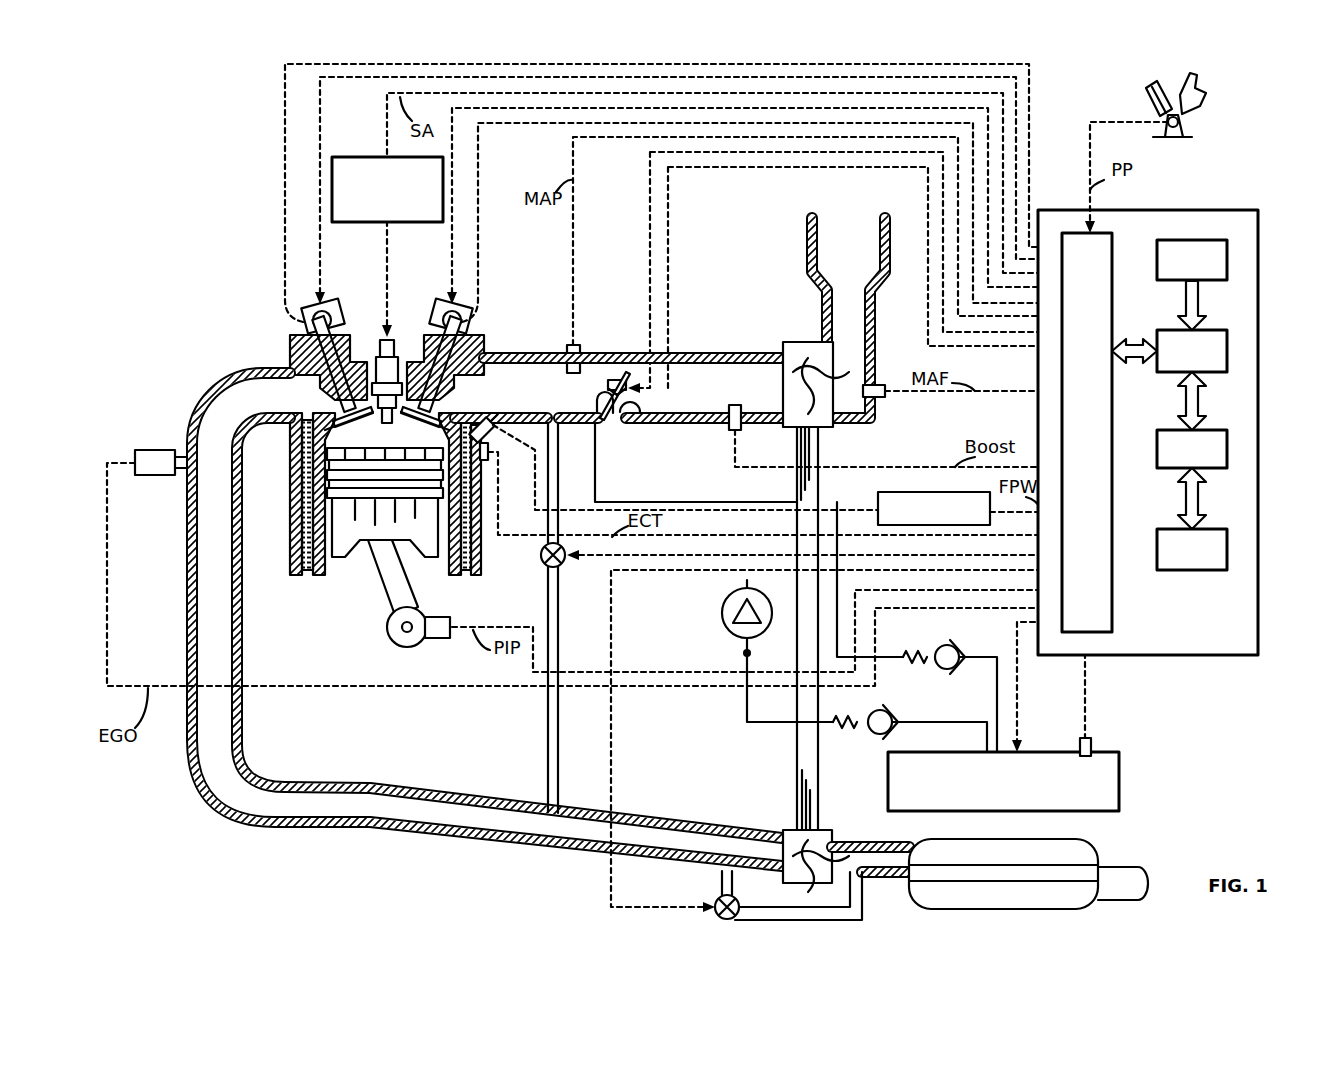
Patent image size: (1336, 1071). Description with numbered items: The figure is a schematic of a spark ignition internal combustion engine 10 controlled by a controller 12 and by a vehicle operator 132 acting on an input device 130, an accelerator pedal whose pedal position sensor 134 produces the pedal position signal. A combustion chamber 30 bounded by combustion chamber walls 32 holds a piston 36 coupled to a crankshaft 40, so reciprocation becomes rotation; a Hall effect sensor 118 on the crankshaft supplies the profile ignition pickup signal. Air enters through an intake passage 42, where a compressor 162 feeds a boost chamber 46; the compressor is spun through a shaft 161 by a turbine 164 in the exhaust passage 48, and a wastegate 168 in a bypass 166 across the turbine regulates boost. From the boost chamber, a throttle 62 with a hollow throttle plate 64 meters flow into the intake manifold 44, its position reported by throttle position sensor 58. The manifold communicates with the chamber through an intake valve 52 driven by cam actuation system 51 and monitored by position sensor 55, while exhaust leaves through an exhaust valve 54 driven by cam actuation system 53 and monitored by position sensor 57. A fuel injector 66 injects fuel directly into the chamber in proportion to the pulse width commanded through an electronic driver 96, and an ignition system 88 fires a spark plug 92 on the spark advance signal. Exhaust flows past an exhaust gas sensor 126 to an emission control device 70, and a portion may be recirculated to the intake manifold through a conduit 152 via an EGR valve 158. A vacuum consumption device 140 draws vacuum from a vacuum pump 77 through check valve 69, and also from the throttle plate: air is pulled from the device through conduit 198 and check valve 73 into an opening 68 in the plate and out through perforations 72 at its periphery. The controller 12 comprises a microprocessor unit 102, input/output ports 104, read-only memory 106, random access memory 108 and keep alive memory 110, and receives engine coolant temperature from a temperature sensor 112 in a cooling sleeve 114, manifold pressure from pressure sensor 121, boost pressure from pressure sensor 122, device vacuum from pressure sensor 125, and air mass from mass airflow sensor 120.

The engine 10 is at (222, 282).
The controller 12 is at (1258, 212).
The combustion chamber 30 is at (302, 540).
The combustion chamber walls 32 is at (328, 565).
The piston 36 is at (370, 560).
The crankshaft 40 is at (393, 645).
The intake passage 42 is at (848, 318).
The intake manifold 44 is at (633, 378).
The boost chamber 46 is at (619, 397).
The exhaust passage 48 is at (487, 619).
The cam actuation system 51 is at (450, 300).
The intake valve 52 is at (440, 408).
The cam actuation system 53 is at (324, 300).
The exhaust valve 54 is at (338, 392).
The position sensor 55 is at (463, 330).
The position sensor 57 is at (303, 318).
The throttle position sensor 58 is at (630, 405).
The throttle 62 is at (612, 372).
The throttle plate 64 is at (626, 372).
The fuel injector 66 is at (497, 432).
The opening 68 is at (625, 420).
The check valve 69 is at (868, 730).
The emission control device 70 is at (1076, 845).
The perforations 72 is at (603, 423).
The check valve 73 is at (938, 667).
The vacuum pump 77 is at (722, 613).
The ignition system 88 is at (345, 157).
The spark plug 92 is at (391, 337).
The electronic driver 96 is at (970, 508).
The microprocessor unit 102 is at (1227, 352).
The input/output ports 104 is at (1112, 240).
The read-only memory 106 is at (1227, 262).
The random access memory 108 is at (1227, 450).
The keep alive memory 110 is at (1227, 552).
The temperature sensor 112 is at (489, 455).
The cooling sleeve 114 is at (482, 570).
The Hall effect sensor 118 is at (440, 640).
The mass airflow sensor 120 is at (885, 395).
The pressure sensor 121 is at (568, 350).
The pressure sensor 122 is at (733, 432).
The pressure sensor 125 is at (1093, 741).
The exhaust gas sensor 126 is at (135, 452).
The input device 130 is at (1150, 104).
The vehicle operator 132 is at (1200, 82).
The pedal position sensor 134 is at (1185, 122).
The vacuum consumption device 140 is at (1003, 716).
The conduit 152 is at (560, 622).
The EGR valve 158 is at (562, 568).
The shaft 161 is at (822, 482).
The compressor 162 is at (815, 340).
The turbine 164 is at (785, 830).
The bypass 166 is at (864, 900).
The wastegate 168 is at (718, 899).
The conduit 198 is at (652, 502).